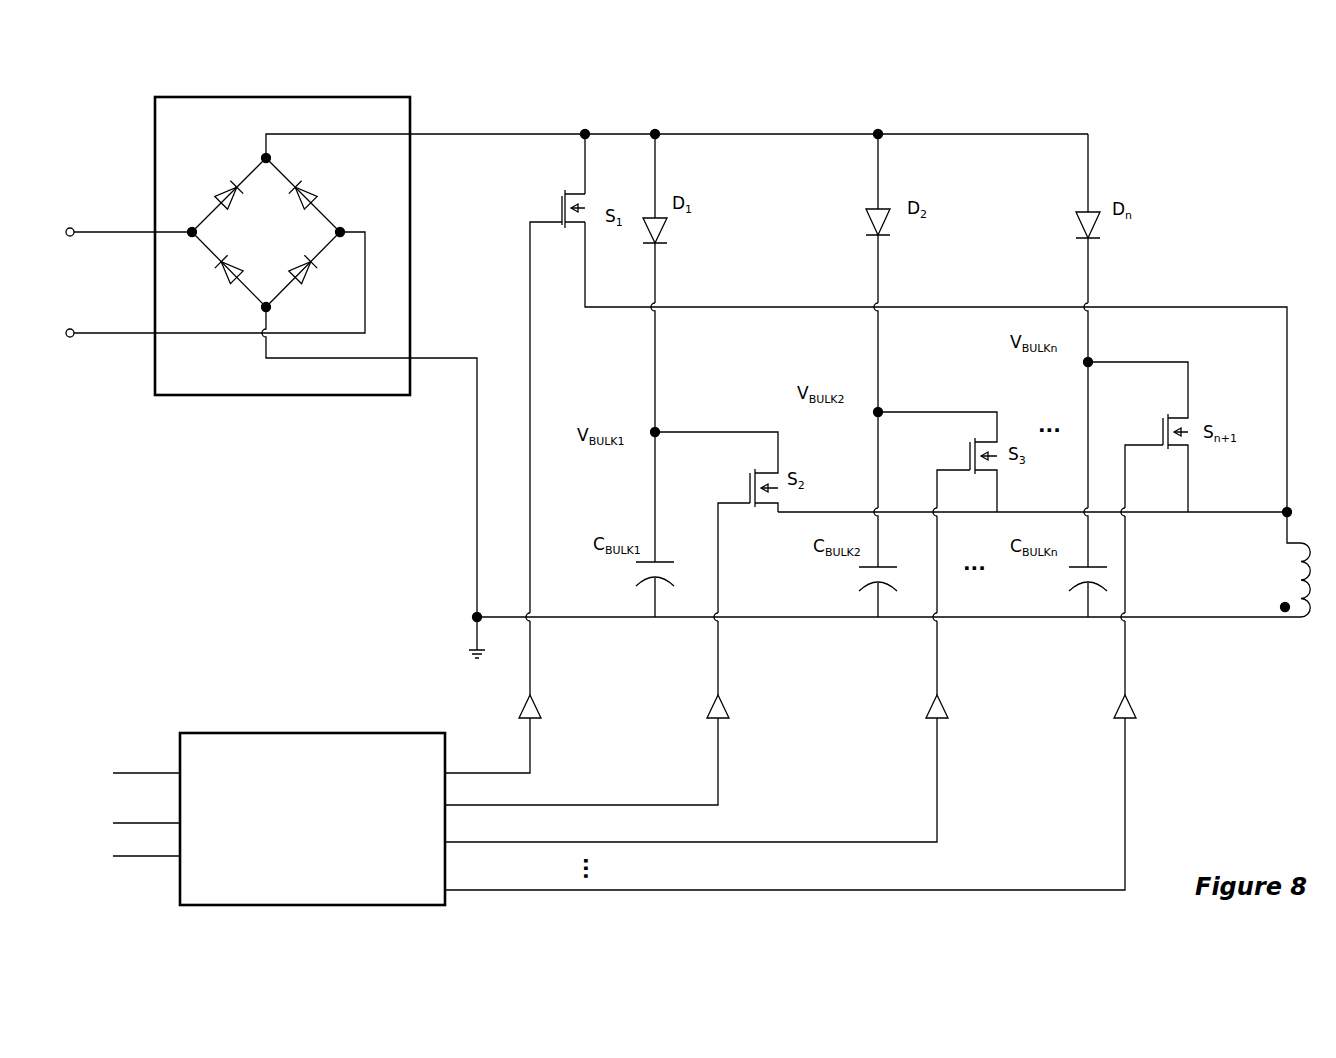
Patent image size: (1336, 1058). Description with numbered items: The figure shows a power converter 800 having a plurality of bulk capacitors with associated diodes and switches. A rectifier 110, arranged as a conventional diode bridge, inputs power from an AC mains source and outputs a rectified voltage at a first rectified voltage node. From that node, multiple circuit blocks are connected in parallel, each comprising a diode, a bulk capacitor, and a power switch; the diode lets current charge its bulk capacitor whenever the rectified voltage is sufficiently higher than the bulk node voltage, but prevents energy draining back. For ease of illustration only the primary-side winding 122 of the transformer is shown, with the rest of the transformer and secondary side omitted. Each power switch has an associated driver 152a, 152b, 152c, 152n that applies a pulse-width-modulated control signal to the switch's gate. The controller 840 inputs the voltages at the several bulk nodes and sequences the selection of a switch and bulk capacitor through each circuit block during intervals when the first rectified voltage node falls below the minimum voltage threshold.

The rectifier 110 is at (569, 341).
The power converter 800 is at (1286, 146).
The primary-side winding 122 is at (1307, 563).
The driver 152a is at (517, 724).
The driver 152b is at (612, 740).
The driver 152c is at (721, 758).
The driver 152n is at (815, 782).
The controller 840 is at (281, 802).